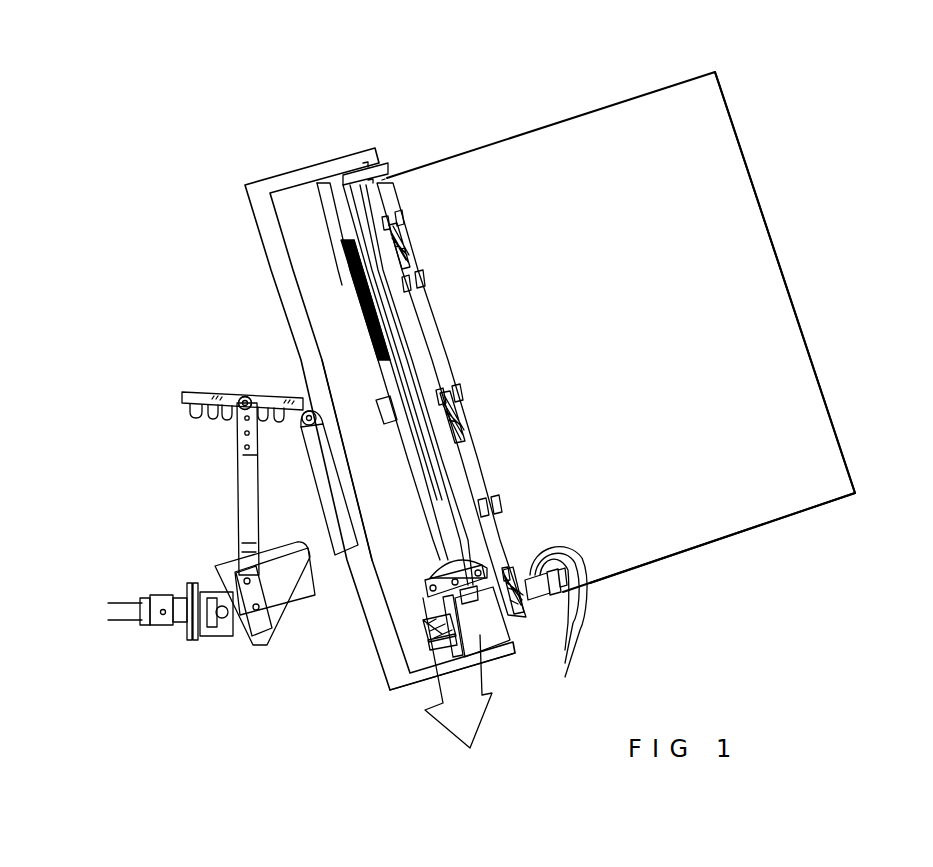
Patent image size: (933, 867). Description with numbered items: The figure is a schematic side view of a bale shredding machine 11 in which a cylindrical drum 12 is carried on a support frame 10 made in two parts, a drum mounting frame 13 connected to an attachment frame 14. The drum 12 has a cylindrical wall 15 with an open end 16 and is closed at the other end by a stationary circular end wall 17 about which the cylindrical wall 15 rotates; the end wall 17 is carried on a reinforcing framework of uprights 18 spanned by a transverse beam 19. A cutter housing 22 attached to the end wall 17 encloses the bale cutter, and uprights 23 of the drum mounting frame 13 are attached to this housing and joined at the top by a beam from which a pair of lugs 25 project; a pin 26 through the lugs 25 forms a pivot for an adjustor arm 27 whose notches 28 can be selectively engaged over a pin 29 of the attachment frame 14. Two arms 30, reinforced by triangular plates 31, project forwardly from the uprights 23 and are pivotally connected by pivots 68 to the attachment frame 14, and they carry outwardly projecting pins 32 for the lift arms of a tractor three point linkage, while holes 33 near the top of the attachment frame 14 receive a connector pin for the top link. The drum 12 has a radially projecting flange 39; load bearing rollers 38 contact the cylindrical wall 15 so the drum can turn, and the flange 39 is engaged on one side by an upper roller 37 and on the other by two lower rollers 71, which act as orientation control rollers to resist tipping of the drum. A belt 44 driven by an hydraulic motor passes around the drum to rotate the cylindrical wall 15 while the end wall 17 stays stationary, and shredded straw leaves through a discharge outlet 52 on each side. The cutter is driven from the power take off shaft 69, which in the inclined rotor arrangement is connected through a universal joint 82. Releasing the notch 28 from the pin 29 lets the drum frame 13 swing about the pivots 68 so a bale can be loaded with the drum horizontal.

The support frame 10 is at (235, 214).
The bale shredding machine 11 is at (262, 104).
The cylindrical drum 12 is at (590, 103).
The drum mounting frame 13 is at (412, 698).
The attachment frame 14 is at (220, 492).
The cylindrical wall 15 is at (720, 110).
The open end 16 is at (838, 365).
The stationary circular end wall 17 is at (372, 318).
The uprights 18 is at (383, 352).
The transverse beam 19 is at (380, 408).
The cutter housing 22 is at (400, 485).
The uprights 23 is at (380, 650).
The lugs 25 is at (262, 392).
The pin 26 is at (303, 427).
The adjustor arm 27 is at (224, 428).
The notches 28 is at (188, 415).
The pin 29 is at (238, 392).
The arms 30 is at (275, 650).
The triangular plates 31 is at (333, 602).
The pins 32 is at (240, 638).
The holes 33 is at (245, 452).
The upper roller 37 is at (385, 165).
The rollers 38 is at (483, 640).
The flange 39 is at (375, 298).
The belt 44 is at (572, 652).
The discharge outlets 52 is at (395, 672).
The pivots 68 is at (235, 568).
The power take off shaft 69 is at (120, 605).
The lower rollers 71 is at (428, 572).
The universal joint 82 is at (180, 632).